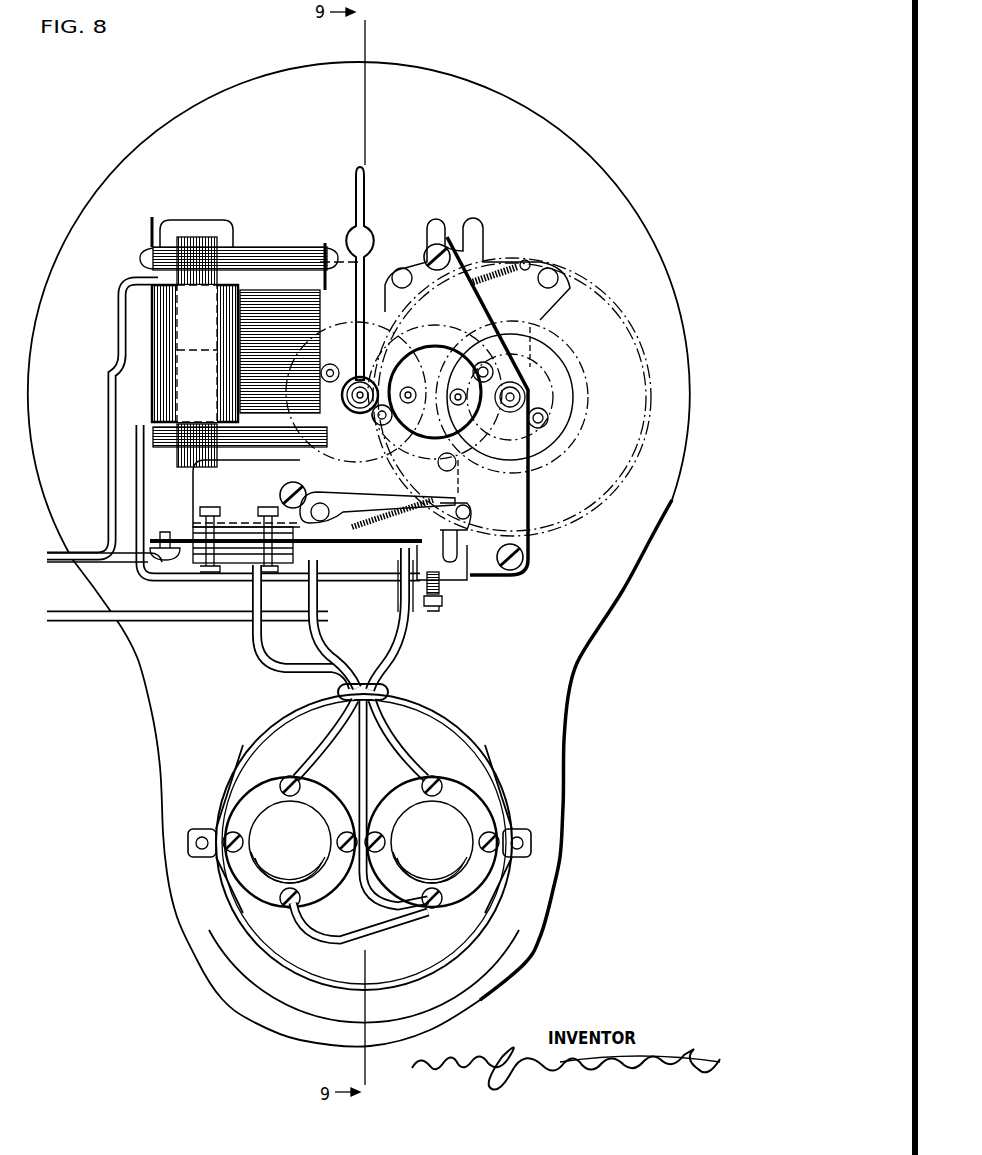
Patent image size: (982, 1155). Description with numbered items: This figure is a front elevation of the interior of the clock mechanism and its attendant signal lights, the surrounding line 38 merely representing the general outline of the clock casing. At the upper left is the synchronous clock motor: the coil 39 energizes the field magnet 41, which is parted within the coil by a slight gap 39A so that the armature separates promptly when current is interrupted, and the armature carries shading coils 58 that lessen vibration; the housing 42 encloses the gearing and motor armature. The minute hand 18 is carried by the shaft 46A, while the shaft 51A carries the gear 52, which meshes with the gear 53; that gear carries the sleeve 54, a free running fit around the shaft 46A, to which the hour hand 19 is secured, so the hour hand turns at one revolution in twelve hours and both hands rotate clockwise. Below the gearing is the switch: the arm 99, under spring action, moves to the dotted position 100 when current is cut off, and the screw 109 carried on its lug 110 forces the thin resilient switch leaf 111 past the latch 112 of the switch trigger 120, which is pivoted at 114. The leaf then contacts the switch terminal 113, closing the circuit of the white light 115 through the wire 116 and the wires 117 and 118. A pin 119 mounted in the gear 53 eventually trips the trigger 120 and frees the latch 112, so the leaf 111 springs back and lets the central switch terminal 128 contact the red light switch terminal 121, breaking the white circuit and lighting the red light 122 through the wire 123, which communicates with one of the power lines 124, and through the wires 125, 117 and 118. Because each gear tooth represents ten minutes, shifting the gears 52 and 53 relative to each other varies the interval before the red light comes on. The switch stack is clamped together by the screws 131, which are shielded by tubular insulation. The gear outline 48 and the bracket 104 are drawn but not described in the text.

The minute hand 18 is at (366, 196).
The hour hand 19 is at (362, 262).
The outline of the clock casing 38 is at (604, 171).
The coil 39 is at (152, 405).
The gap 39A is at (166, 355).
The field magnet 41 is at (186, 240).
The housing 42 is at (279, 290).
The shaft 46A is at (435, 404).
The gear 48 is at (606, 300).
The shaft 51A is at (512, 396).
The gear 52 is at (578, 441).
The gear 53 is at (333, 322).
The sleeve 54 is at (345, 418).
The shading coils 58 is at (226, 224).
The arm 99 is at (493, 566).
The dotted line position 100 is at (468, 566).
The bracket plate 104 is at (487, 232).
The screw 109 is at (437, 608).
The lug 110 is at (452, 588).
The switch leaf 111 is at (432, 535).
The latch 112 is at (478, 527).
The switch terminal 113 is at (488, 500).
The pivot 114 is at (520, 472).
The white light 115 is at (432, 842).
The wire 116 is at (328, 617).
The wire 117 is at (386, 652).
The wire 118 is at (148, 623).
The pin 119 is at (313, 478).
The switch trigger 120 is at (280, 486).
The red light switch terminal 121 is at (404, 604).
The red light 122 is at (290, 842).
The wire 123 is at (282, 666).
The power line 124 is at (96, 552).
The wire 125 is at (340, 947).
The central switch terminal 128 is at (395, 621).
The screws 131 is at (274, 572).